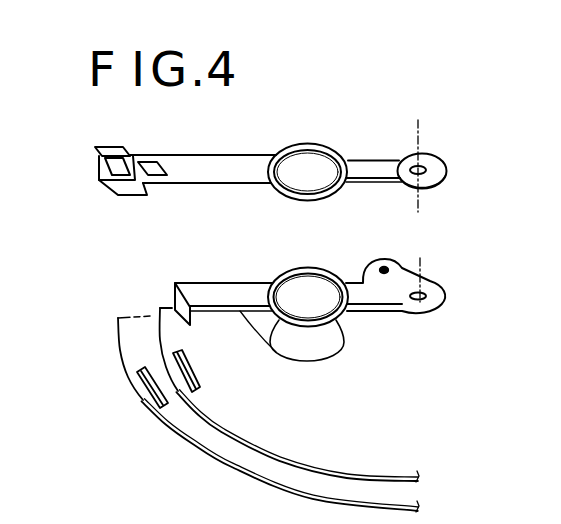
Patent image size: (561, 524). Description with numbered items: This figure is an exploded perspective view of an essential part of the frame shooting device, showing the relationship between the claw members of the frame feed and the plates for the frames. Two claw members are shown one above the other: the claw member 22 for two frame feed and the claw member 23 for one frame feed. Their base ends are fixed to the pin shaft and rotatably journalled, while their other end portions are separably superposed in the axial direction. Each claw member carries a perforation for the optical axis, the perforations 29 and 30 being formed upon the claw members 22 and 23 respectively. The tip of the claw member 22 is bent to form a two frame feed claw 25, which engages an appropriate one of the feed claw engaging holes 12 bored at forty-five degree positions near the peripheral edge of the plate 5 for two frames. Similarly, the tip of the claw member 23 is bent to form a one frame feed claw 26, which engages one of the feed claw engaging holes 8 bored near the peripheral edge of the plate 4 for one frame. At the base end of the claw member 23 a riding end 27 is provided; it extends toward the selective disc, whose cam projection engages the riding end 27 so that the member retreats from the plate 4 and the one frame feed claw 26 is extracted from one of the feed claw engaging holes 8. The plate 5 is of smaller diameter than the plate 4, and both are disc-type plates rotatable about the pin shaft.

The plate for one frame 4 is at (118, 362).
The plate for two frames 5 is at (170, 333).
The feed claw engaging holes 8 is at (137, 387).
The feed claw engaging holes 12 is at (177, 390).
The claw member for two frame feed 22 is at (393, 293).
The claw member for one frame feed 23 is at (393, 168).
The two frame feed claw 25 is at (176, 300).
The one frame feed claw 26 is at (148, 193).
The riding end 27 is at (100, 182).
The perforation for optical axis 29 is at (292, 275).
The perforation for optical axis 30 is at (307, 152).